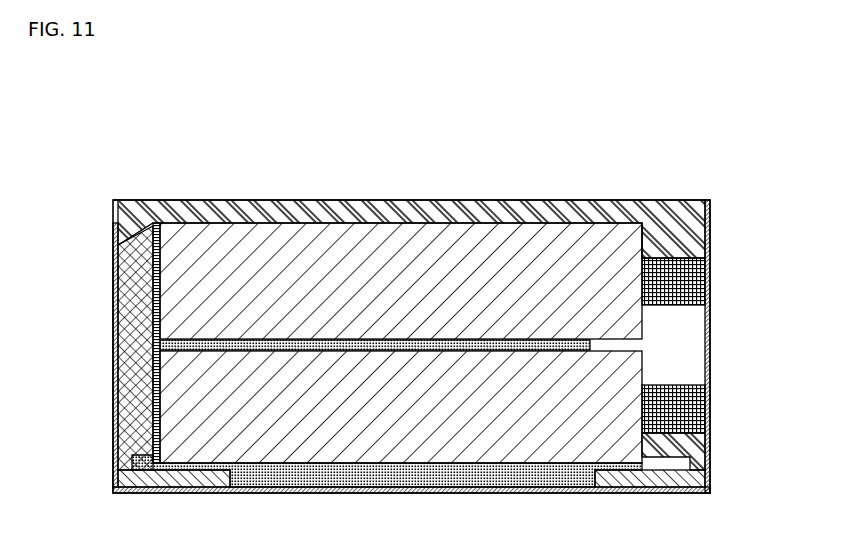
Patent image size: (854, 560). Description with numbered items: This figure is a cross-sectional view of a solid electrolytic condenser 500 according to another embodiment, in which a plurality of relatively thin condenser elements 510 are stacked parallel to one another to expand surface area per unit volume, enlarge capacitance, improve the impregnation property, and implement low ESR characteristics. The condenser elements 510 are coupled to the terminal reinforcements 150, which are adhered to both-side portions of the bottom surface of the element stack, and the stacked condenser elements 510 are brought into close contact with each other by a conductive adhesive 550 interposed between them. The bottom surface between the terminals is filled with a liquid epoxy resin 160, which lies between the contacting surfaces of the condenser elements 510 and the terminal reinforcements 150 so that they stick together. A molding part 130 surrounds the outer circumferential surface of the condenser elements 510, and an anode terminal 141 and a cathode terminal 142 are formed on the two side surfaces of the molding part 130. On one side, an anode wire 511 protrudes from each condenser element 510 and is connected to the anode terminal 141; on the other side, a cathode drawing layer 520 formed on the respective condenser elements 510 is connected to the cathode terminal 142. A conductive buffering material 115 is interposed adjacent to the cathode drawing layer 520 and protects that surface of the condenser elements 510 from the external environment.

The solid electrolytic condenser 500 is at (673, 132).
The molding part 130 is at (413, 211).
The anode terminal 141 is at (710, 230).
The cathode terminal 142 is at (114, 273).
The cathode drawing layer 520 is at (128, 358).
The conductive buffering material 115 is at (152, 412).
The condenser element 510 is at (480, 376).
The conductive adhesive 550 is at (303, 352).
The anode wire 511 is at (697, 281).
The liquid epoxy resin 160 is at (413, 477).
The terminal reinforcement 150 is at (169, 480).